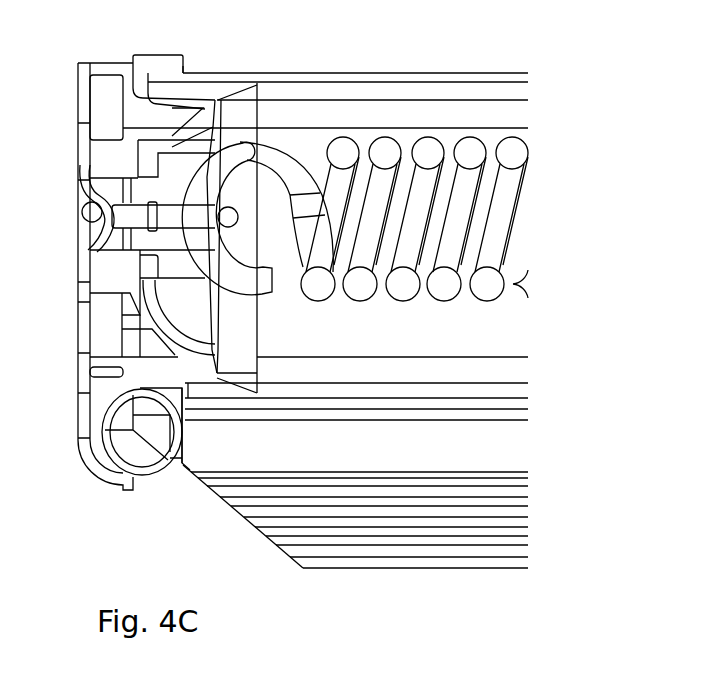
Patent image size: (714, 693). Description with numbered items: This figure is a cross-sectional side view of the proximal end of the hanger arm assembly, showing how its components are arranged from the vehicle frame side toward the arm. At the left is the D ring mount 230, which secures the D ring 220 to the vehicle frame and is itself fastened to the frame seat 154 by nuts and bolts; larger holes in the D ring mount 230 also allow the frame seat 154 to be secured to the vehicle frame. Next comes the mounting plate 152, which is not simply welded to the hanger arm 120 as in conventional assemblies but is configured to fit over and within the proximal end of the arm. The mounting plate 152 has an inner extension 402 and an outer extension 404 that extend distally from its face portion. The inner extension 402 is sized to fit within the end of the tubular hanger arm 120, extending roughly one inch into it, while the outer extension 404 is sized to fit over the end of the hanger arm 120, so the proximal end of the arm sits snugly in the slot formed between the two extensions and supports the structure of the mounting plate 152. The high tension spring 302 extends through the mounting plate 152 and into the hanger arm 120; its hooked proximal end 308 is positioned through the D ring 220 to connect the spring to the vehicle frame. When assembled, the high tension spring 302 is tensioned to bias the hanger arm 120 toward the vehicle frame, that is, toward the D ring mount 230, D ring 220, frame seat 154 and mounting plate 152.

The frame seat 154 is at (110, 65).
The mounting plate 152 is at (158, 55).
The outer extension 404 is at (183, 66).
The inner extension 402 is at (255, 94).
The hanger arm 120 is at (367, 73).
The high tension spring 302 is at (428, 137).
The D ring 220 is at (80, 203).
The D ring mount 230 is at (80, 234).
The hooked proximal end 308 is at (203, 267).